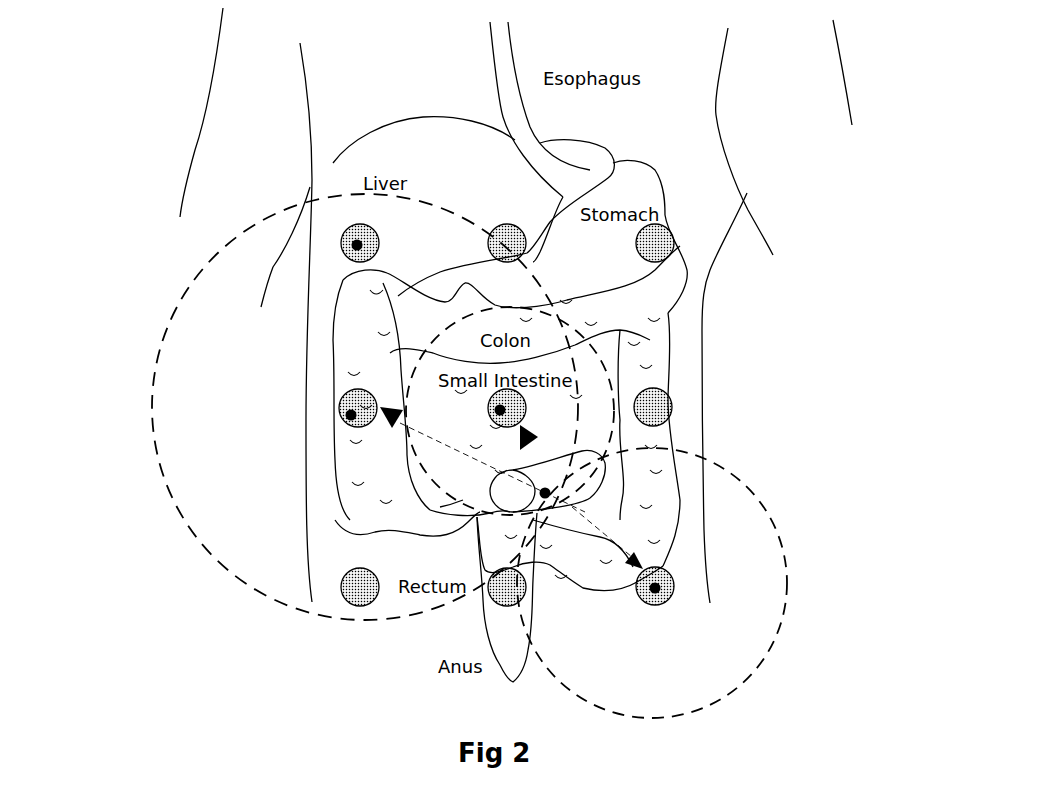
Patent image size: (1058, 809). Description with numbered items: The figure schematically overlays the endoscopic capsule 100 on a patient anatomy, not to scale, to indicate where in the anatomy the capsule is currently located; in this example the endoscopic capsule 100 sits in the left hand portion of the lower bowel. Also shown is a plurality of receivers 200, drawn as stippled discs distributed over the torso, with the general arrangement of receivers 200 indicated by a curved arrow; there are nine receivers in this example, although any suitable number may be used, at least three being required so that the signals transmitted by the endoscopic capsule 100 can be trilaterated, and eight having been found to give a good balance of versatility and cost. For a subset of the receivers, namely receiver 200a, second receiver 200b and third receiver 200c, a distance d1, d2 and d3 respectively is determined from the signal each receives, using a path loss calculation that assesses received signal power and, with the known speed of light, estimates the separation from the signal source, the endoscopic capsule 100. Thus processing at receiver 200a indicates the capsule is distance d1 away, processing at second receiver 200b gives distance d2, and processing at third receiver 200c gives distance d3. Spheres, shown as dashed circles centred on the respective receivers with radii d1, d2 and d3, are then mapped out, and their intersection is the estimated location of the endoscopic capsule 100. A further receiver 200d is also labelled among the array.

The endoscopic capsule 100 is at (545, 493).
The plurality of receivers 200 is at (477, 428).
The receiver 200a is at (351, 415).
The second receiver 200b is at (500, 410).
The third receiver 200c is at (655, 588).
The fourth sensor 200d is at (357, 245).
The distance d1 is at (492, 467).
The distance d2 is at (542, 438).
The distance d3 is at (607, 538).